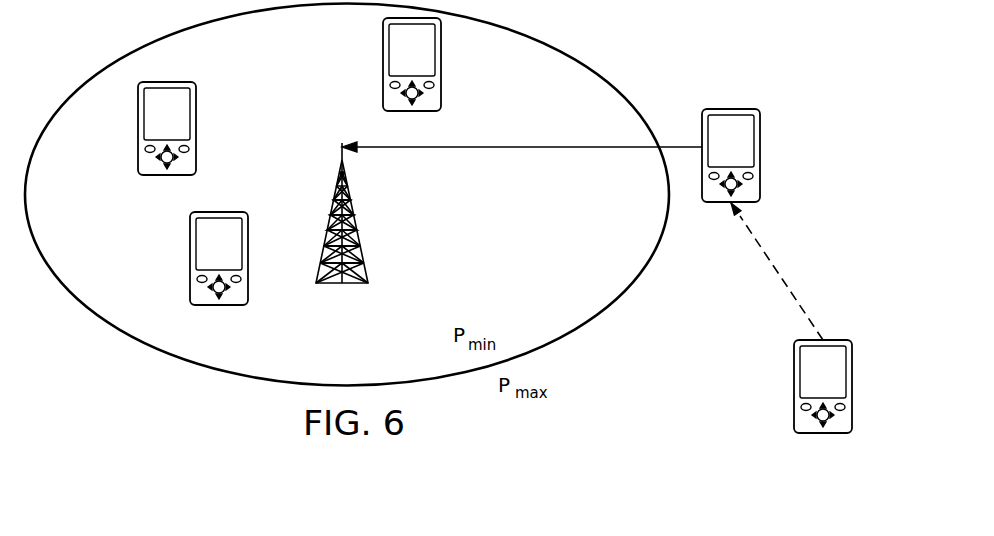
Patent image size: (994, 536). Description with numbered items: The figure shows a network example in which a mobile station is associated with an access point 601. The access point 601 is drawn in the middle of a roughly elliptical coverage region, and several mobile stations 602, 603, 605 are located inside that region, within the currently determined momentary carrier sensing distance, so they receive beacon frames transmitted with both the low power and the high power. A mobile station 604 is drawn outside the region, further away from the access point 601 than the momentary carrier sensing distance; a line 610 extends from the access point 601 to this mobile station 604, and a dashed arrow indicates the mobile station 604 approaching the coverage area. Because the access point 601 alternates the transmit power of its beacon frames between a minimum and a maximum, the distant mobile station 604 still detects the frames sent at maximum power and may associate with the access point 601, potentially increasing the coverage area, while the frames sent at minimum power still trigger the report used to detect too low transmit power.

The access point 601 is at (328, 216).
The mobile device within coverage area 602 is at (189, 260).
The mobile device within coverage area 603 is at (441, 68).
The mobile station 604 is at (729, 108).
The mobile device within coverage area 605 is at (197, 128).
The distance / signal path between device and base station 610 is at (550, 148).